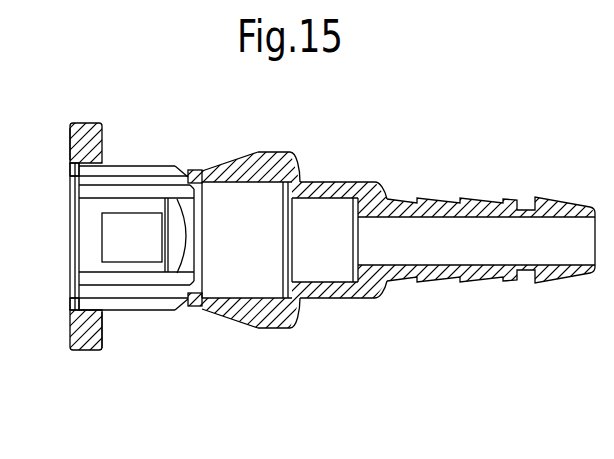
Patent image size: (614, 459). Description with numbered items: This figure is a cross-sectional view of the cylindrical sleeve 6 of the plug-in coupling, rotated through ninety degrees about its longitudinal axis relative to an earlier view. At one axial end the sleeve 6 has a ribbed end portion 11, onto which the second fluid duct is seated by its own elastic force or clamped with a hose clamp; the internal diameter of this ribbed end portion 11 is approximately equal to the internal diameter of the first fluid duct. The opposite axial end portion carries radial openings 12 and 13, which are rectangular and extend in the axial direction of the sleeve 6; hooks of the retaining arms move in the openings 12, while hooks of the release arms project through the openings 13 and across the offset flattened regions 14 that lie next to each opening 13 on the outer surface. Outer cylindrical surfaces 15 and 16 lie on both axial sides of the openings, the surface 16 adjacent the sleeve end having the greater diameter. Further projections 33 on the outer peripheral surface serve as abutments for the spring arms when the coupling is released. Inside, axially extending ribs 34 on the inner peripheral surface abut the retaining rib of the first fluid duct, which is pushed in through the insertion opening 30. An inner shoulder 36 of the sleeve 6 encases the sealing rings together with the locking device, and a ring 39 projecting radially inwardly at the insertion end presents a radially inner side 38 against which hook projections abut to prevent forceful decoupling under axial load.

The cylindrical sleeve 6 is at (345, 178).
The ribbed end portion 11 is at (487, 211).
The radial opening 12 is at (117, 267).
The radial opening 13 is at (142, 166).
The offset flattened region 14 is at (197, 170).
The outer cylindrical surface 15 is at (277, 153).
The outer cylindrical surface 16 is at (93, 124).
The insertion opening 30 is at (82, 251).
The further projection 33 is at (221, 174).
The axially extending rib 34 is at (116, 193).
The inner shoulder 36 is at (286, 197).
The radially inner side 38 is at (101, 333).
The ring 39 is at (71, 134).